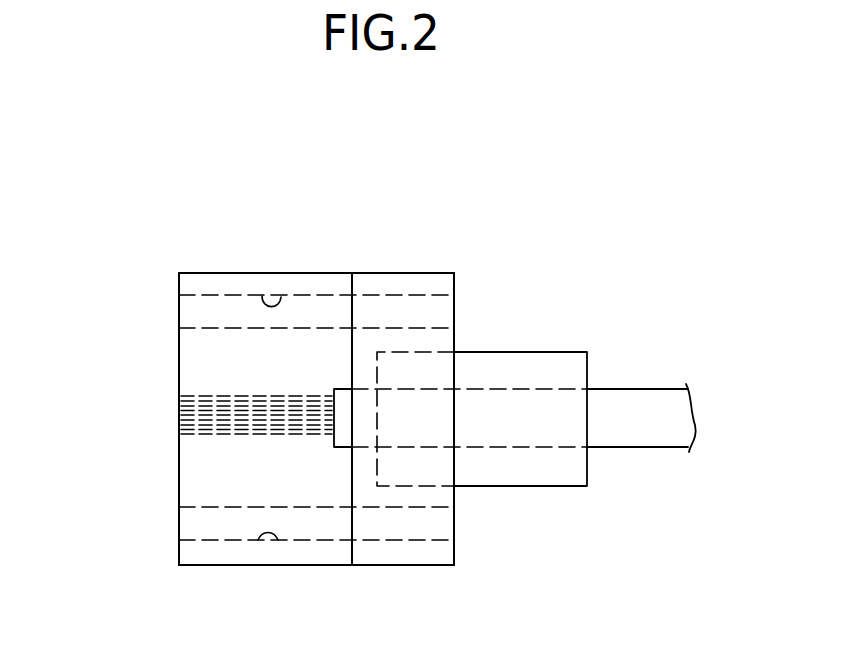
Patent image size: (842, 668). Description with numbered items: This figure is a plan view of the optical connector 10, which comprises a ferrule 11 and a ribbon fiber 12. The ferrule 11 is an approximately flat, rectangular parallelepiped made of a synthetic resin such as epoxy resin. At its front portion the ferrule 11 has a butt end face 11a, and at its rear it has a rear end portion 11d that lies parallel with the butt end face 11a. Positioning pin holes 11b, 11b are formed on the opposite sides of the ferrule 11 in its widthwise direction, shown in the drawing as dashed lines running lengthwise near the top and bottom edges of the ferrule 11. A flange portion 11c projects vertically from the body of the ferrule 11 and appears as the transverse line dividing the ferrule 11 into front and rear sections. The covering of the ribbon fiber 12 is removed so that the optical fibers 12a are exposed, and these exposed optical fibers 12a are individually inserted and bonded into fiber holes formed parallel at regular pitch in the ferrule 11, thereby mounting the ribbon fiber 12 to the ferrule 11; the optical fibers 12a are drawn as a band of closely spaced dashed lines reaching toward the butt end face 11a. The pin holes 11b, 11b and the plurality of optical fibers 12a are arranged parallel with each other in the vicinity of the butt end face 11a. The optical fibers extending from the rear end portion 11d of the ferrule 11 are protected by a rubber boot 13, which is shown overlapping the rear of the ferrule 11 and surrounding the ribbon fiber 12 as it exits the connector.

The optical connector 10 is at (338, 151).
The ferrule 11 is at (392, 273).
The butt end face 11a is at (179, 487).
The positioning pin holes 11b is at (266, 295).
The flange portion 11c is at (398, 497).
The rear end portion 11d is at (454, 500).
The ribbon fiber 12 is at (639, 388).
The optical fibers 12a is at (179, 417).
The rubber boot 13 is at (508, 367).